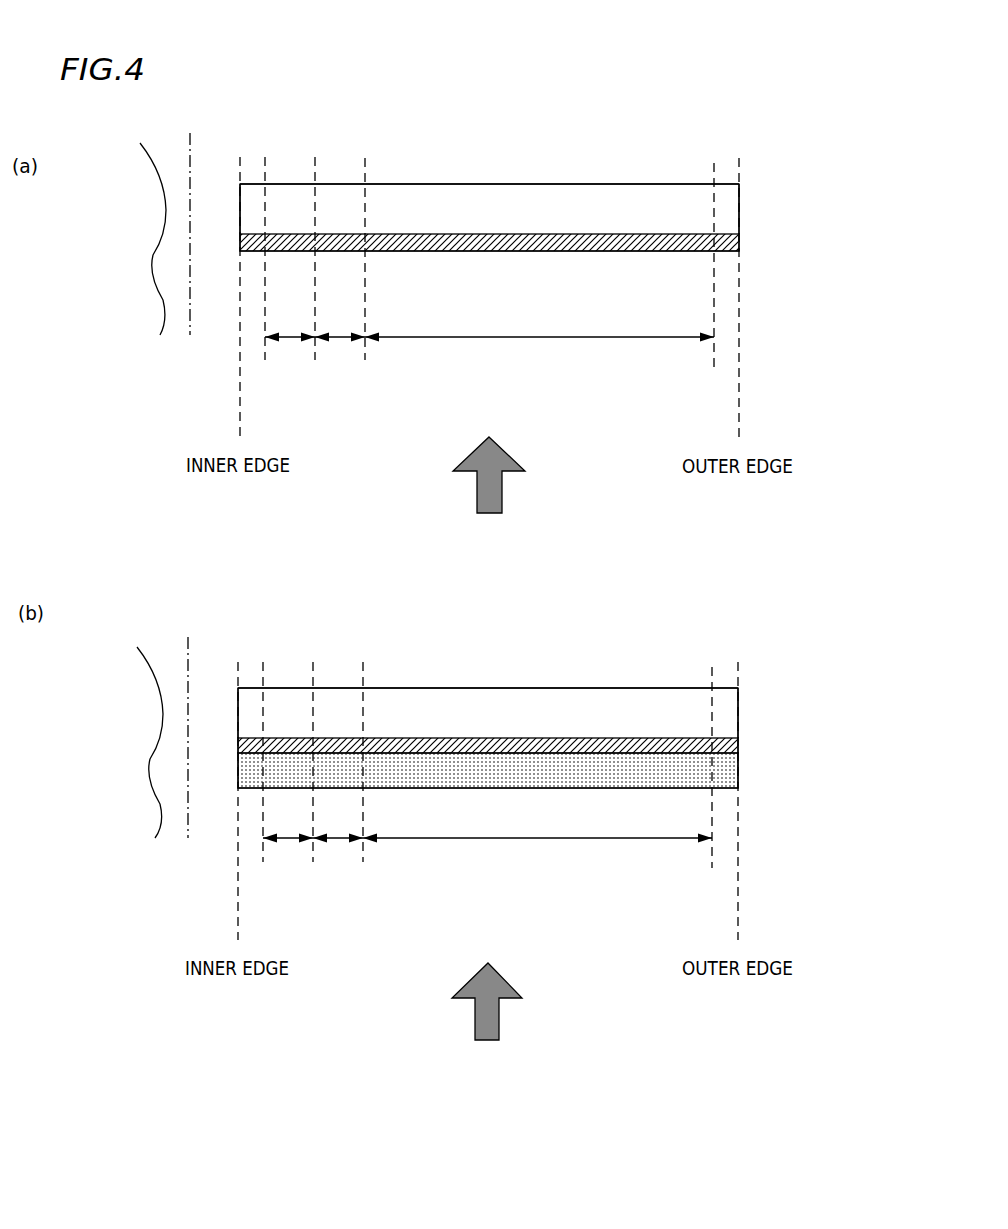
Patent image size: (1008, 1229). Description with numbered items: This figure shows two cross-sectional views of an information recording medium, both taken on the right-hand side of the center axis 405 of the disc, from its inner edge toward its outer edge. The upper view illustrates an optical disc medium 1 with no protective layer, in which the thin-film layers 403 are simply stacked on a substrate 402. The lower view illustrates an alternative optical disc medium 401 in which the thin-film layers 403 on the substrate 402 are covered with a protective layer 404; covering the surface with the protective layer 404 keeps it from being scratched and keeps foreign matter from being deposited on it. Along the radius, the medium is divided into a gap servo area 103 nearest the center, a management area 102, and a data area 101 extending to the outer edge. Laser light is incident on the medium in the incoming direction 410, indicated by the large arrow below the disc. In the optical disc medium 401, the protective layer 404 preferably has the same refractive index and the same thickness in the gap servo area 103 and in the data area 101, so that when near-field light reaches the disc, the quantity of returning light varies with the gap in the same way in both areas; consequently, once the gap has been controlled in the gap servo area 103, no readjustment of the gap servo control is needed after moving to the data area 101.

The optical disc medium 1 is at (763, 183).
The optical disc medium 401 is at (762, 688).
The substrate 402 is at (390, 193).
The thin-film layers 403 is at (410, 237).
The protective layer 404 is at (510, 778).
The center axis 405 is at (122, 888).
The data area 101 is at (528, 337).
The management area 102 is at (340, 337).
The gap servo area 103 is at (288, 337).
The incoming direction 410 is at (490, 503).